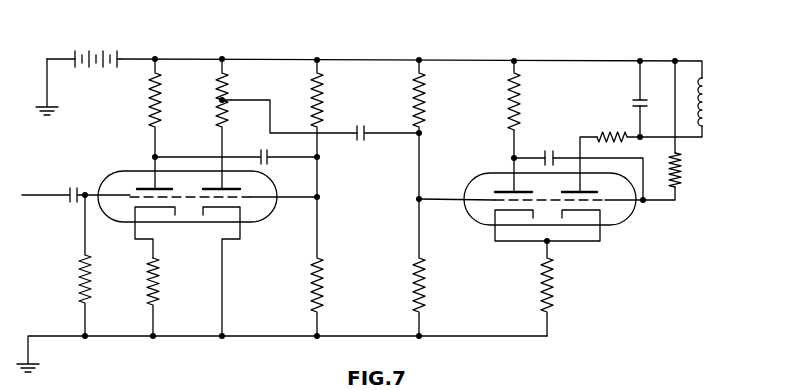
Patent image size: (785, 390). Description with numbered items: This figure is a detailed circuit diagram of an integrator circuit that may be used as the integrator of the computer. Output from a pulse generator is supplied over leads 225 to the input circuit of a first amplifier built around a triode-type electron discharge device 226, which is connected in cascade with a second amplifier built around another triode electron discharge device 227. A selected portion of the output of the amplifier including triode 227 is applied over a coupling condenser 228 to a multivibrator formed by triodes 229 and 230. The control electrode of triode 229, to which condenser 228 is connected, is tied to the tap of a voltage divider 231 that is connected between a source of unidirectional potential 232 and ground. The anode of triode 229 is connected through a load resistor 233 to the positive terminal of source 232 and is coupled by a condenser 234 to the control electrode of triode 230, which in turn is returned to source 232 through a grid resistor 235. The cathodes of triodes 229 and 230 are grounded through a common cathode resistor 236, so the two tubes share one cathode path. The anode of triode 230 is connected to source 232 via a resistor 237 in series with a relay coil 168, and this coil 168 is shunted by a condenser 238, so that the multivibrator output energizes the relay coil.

The relay coil 168 is at (707, 121).
The leads 225 is at (80, 290).
The triode-type electron discharge device 226 is at (131, 217).
The triode electron discharge device 227 is at (226, 221).
The coupling condenser 228 is at (367, 130).
The triode 229 is at (476, 212).
The triode 230 is at (618, 215).
The voltage divider 231 is at (425, 113).
The source of unidirectional potential 232 is at (85, 50).
The load resistor 233 is at (521, 100).
The condenser 234 is at (548, 152).
The grid resistor 235 is at (682, 172).
The common cathode resistor 236 is at (552, 288).
The resistor 237 is at (615, 133).
The condenser 238 is at (658, 97).